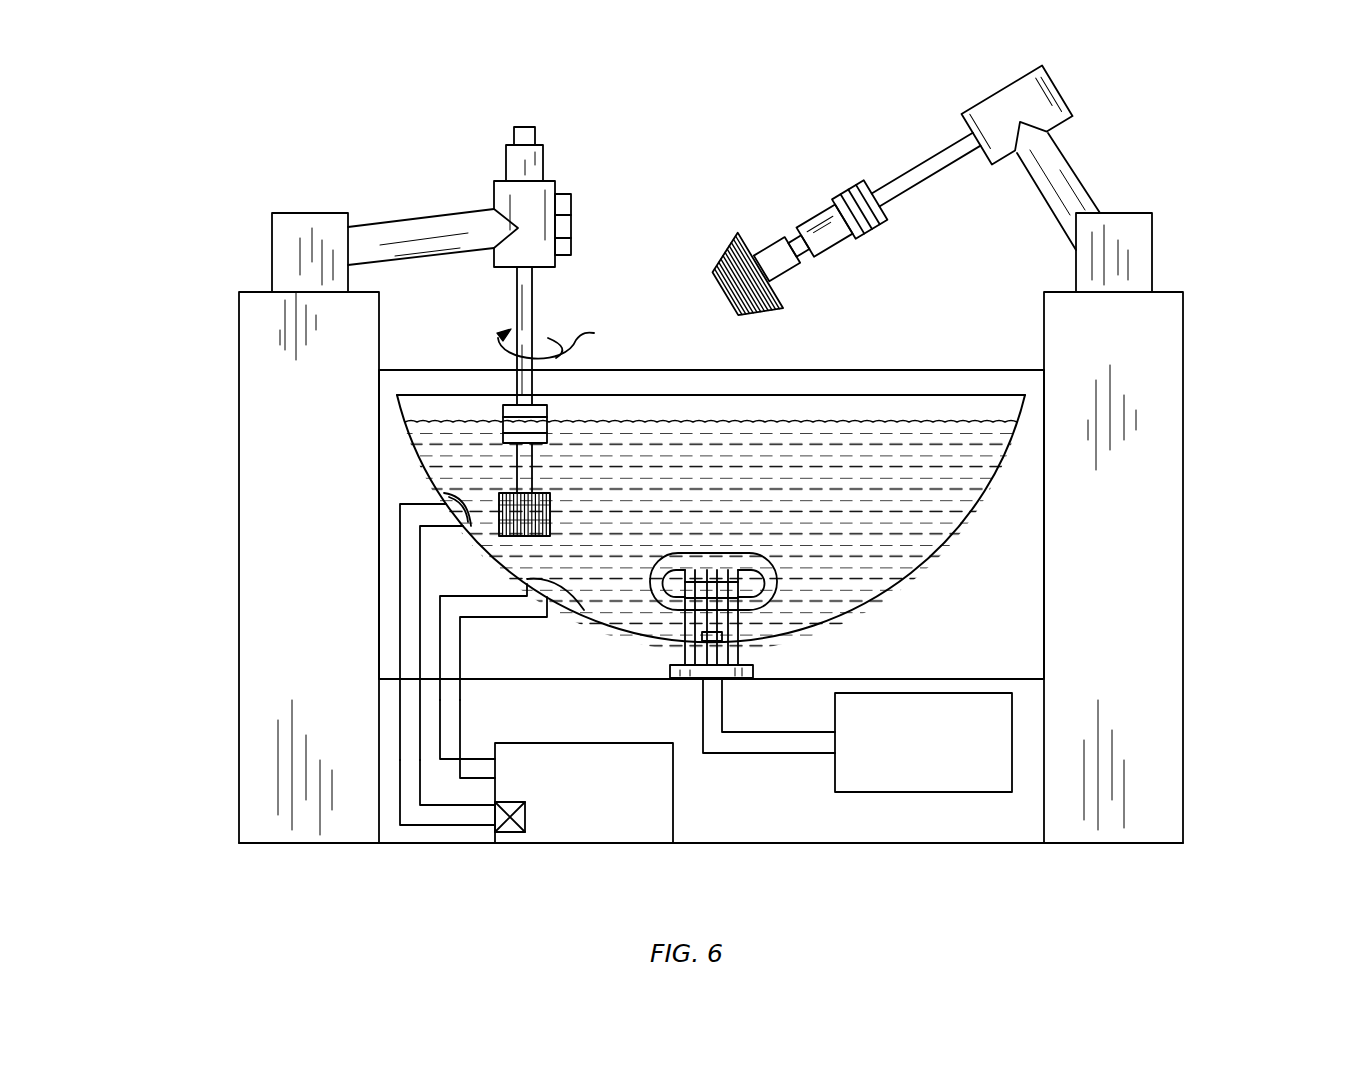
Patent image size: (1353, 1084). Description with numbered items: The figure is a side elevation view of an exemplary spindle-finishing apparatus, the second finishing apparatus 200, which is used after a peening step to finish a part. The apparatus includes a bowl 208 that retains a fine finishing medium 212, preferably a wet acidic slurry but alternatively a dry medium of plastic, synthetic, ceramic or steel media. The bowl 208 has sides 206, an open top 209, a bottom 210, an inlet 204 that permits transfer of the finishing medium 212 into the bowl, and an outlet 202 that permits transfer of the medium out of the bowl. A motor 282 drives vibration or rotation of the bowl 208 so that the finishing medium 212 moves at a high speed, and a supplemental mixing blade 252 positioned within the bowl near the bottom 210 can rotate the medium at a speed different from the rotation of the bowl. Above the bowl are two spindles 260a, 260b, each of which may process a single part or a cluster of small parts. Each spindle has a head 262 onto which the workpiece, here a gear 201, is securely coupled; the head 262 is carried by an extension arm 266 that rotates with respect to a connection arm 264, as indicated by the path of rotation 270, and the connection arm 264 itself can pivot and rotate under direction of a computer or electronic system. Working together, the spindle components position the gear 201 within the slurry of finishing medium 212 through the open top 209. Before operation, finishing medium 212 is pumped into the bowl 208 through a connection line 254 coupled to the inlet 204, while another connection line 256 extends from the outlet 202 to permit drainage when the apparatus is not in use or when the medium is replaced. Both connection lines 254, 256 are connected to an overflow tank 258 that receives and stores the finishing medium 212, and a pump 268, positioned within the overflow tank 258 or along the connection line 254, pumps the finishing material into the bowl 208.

The second finishing apparatus 200 is at (226, 156).
The gear 201 is at (722, 263).
The outlet 202 is at (547, 580).
The inlet 204 is at (460, 500).
The sides 206 is at (958, 527).
The bowl 208 is at (1025, 409).
The open top 209 is at (866, 378).
The bottom 210 is at (758, 668).
The finishing medium 212 is at (975, 465).
The supplemental mixing blade 252 is at (777, 580).
The connection line 254 is at (413, 797).
The connection line 256 is at (450, 717).
The overflow tank 258 is at (673, 793).
The spindle 260a is at (552, 297).
The spindle 260b is at (892, 147).
The head 262 is at (530, 463).
The connection arm 264 is at (538, 217).
The extension arm 266 is at (525, 318).
The pump 268 is at (503, 832).
The path of rotation 270 is at (557, 332).
The motor 282 is at (978, 792).